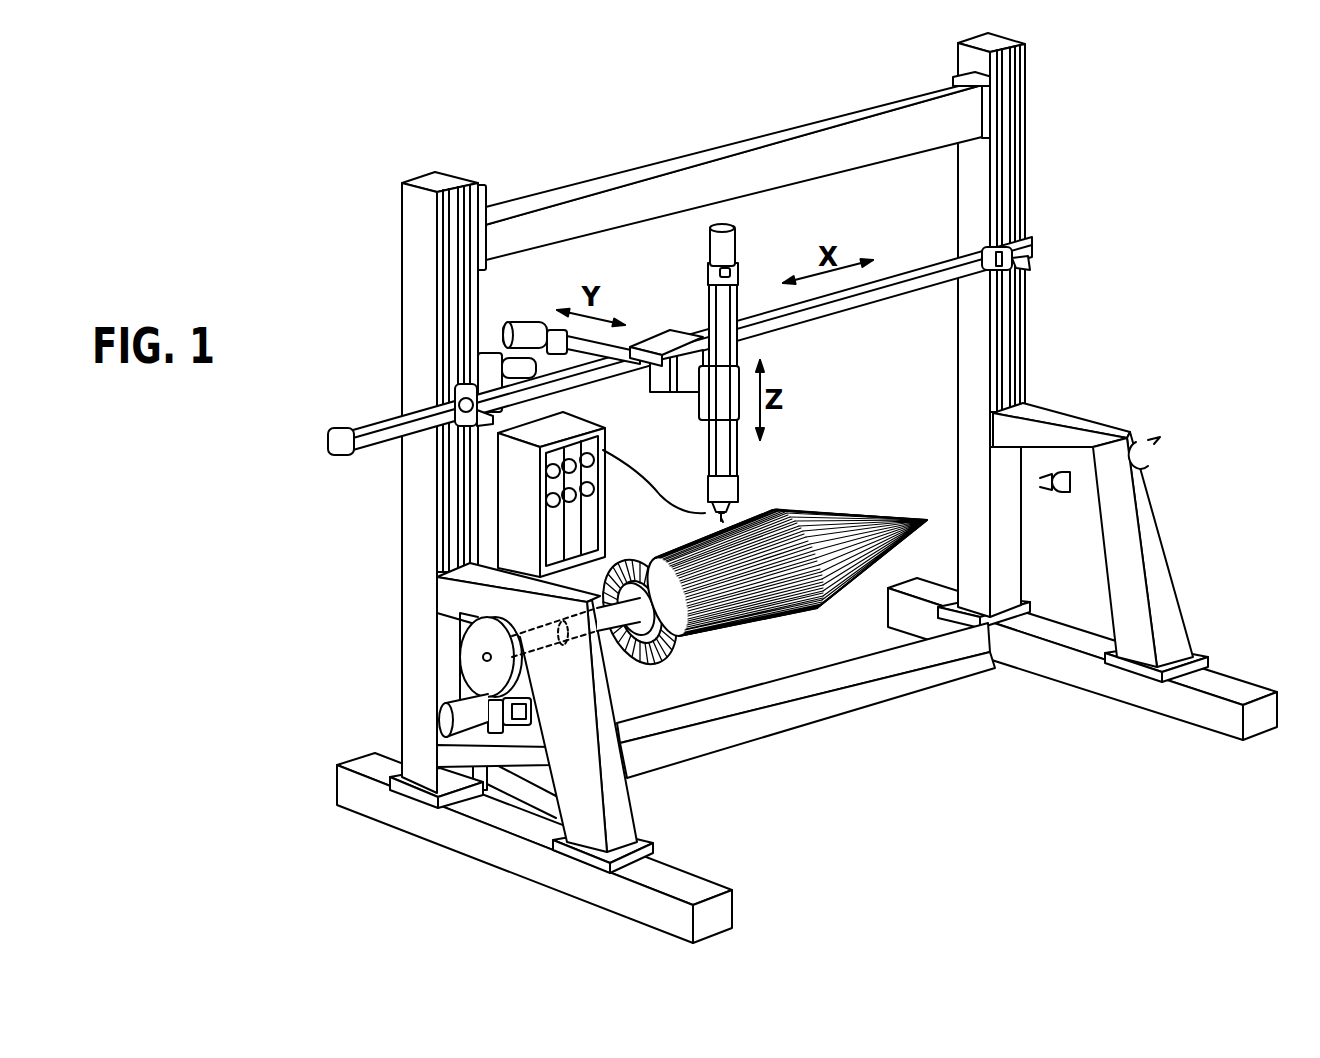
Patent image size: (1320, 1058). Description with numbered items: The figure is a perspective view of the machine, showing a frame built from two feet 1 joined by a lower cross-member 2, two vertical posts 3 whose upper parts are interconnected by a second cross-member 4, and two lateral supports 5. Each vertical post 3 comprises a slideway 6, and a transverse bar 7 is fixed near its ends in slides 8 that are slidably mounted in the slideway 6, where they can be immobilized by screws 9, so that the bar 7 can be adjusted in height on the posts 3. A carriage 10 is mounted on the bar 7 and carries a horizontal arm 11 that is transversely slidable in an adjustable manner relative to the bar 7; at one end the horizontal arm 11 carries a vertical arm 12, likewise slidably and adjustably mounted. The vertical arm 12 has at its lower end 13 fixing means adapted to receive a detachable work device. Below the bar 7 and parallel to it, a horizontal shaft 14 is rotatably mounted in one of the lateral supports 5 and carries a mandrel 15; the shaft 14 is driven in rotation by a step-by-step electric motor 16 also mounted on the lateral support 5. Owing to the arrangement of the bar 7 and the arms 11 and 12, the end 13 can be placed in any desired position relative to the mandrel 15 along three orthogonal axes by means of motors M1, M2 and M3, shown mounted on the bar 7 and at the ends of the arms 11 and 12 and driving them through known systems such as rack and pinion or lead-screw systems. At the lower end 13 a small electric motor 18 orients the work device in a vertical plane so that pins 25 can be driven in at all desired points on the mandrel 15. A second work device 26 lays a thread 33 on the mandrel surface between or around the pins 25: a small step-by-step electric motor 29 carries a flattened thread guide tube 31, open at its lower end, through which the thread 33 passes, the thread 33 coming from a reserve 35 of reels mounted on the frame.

The feet 1 is at (470, 843).
The lower cross-member 2 is at (800, 710).
The vertical posts 3 is at (415, 233).
The second cross-member 4 is at (655, 172).
The lateral supports 5 is at (610, 790).
The slideway 6 is at (462, 310).
The transverse bar 7 is at (897, 275).
The slides 8 is at (452, 396).
The screws 9 is at (1032, 268).
The carriage 10 is at (657, 330).
The horizontal arm 11 is at (552, 317).
The vertical arm 12 is at (734, 307).
The lower end 13 is at (712, 477).
The horizontal shaft 14 is at (605, 613).
The mandrel 15 is at (847, 533).
The step-by-step electric motor 16 is at (463, 717).
The small electric motor 18 is at (713, 510).
The pins 25 is at (923, 520).
The second work device 26 is at (748, 497).
The small step-by-step electric motor 29 is at (733, 507).
The thread guide tube 31 is at (730, 517).
The thread 33 is at (646, 498).
The reserve of reels 35 is at (545, 519).
The motor M1 is at (569, 372).
The motor M2 is at (523, 323).
The motor M3 is at (732, 244).